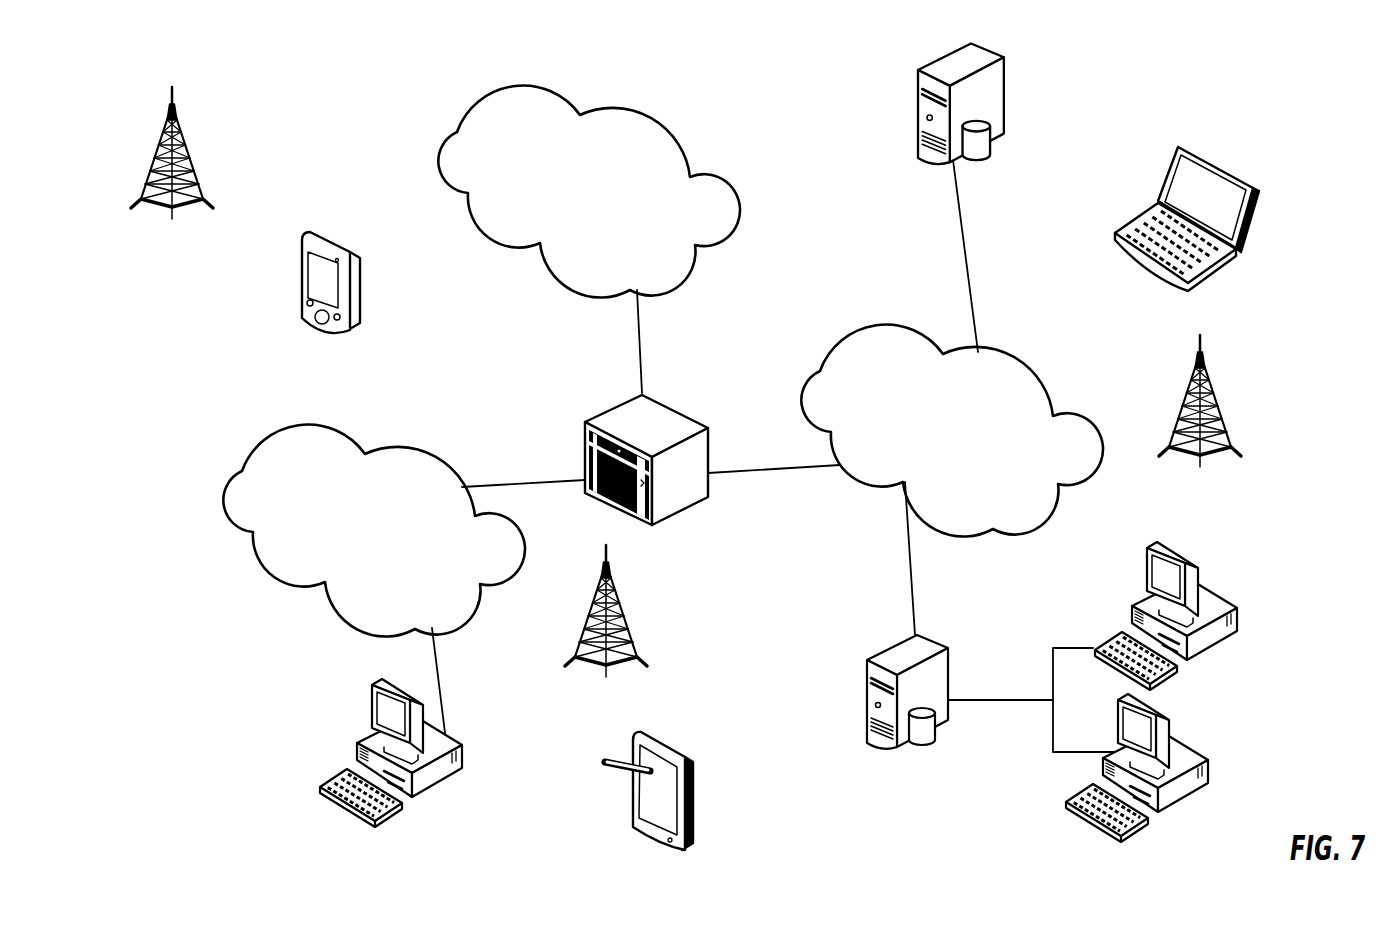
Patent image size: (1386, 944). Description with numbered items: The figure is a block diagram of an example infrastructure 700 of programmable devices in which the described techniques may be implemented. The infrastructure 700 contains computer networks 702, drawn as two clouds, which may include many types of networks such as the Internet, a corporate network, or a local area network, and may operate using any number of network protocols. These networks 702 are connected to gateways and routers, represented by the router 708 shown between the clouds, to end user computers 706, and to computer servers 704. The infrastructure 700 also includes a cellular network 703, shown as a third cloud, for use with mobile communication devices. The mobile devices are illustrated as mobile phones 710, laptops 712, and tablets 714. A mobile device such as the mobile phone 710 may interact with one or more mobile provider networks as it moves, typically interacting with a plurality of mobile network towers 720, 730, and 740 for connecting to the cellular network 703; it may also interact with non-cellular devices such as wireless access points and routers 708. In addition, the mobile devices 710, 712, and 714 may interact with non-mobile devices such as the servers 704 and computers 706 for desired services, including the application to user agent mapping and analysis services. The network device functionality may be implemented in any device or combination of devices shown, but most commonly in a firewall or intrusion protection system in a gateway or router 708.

The infrastructure 700 is at (1100, 132).
The computer networks 702 is at (348, 438).
The cellular network 703 is at (632, 120).
The computer servers 704 is at (918, 95).
The end user computers 706 is at (457, 747).
The gateways and routers 708 is at (672, 405).
The mobile phones 710 is at (337, 233).
The laptops 712 is at (1232, 170).
The tablets 714 is at (670, 742).
The mobile network tower 720 is at (606, 628).
The mobile network tower 730 is at (1200, 418).
The mobile network tower 740 is at (172, 169).